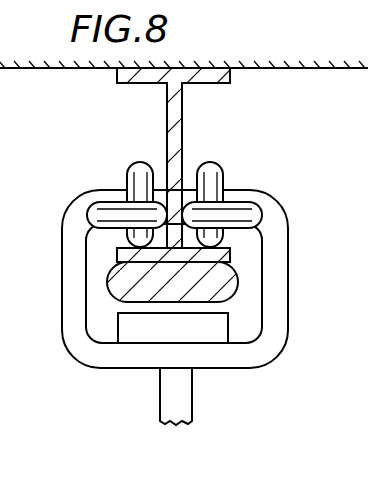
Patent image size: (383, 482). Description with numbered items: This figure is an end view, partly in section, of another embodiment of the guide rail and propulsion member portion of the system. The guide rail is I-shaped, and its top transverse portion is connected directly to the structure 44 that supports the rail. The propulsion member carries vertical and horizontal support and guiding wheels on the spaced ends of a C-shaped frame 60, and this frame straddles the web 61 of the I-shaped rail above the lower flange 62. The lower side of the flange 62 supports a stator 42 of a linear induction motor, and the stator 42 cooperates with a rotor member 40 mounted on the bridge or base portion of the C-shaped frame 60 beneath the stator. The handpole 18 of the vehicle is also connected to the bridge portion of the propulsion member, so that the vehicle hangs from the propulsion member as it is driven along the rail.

The structure 44 is at (306, 68).
The web 61 is at (167, 118).
The lower flange 62 is at (232, 251).
The stator 42 is at (112, 290).
The rotor member 40 is at (225, 325).
The C-shaped frame 60 is at (248, 369).
The handpole 18 is at (185, 427).